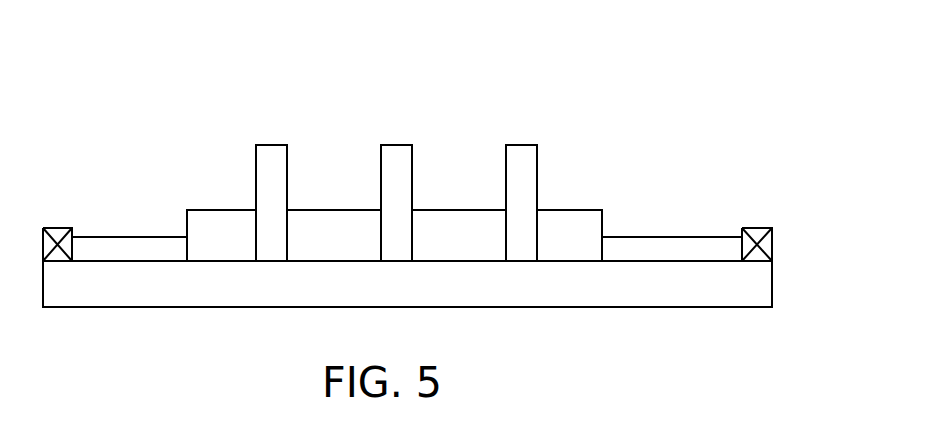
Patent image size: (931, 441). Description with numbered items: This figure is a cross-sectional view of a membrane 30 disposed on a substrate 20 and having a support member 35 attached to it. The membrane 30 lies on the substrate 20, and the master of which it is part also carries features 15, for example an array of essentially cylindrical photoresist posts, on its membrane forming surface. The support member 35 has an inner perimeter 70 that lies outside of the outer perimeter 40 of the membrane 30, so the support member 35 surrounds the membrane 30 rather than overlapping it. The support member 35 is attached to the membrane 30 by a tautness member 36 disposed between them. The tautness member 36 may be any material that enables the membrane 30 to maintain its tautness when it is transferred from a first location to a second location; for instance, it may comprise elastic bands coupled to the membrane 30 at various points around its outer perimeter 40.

The features 15 is at (526, 144).
The substrate 20 is at (742, 287).
The membrane 30 is at (577, 208).
The support member 35 is at (51, 228).
The tautness member 36 is at (135, 237).
The outer perimeter 40 is at (187, 228).
The inner perimeter 70 is at (73, 247).